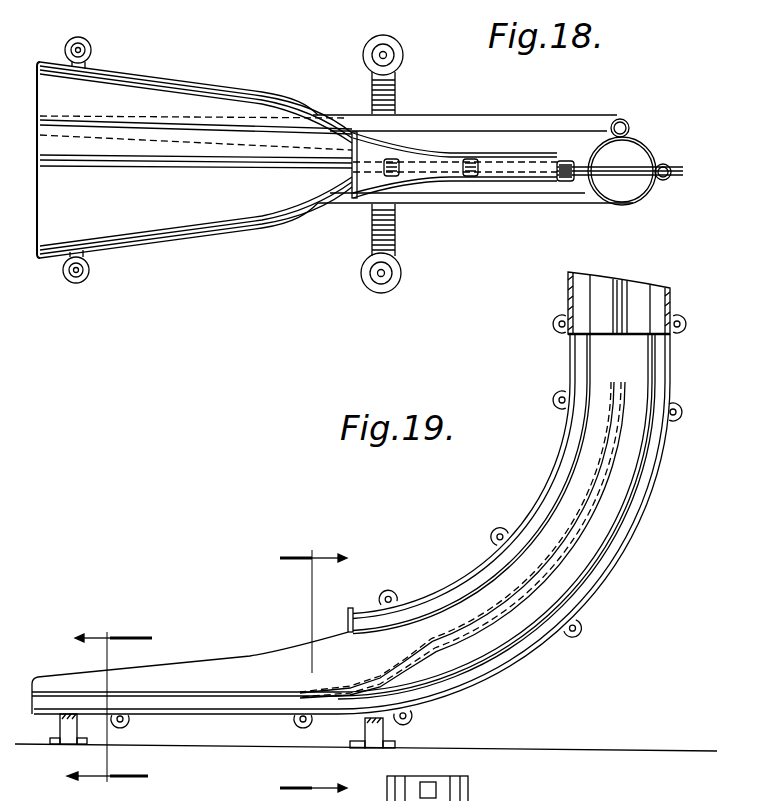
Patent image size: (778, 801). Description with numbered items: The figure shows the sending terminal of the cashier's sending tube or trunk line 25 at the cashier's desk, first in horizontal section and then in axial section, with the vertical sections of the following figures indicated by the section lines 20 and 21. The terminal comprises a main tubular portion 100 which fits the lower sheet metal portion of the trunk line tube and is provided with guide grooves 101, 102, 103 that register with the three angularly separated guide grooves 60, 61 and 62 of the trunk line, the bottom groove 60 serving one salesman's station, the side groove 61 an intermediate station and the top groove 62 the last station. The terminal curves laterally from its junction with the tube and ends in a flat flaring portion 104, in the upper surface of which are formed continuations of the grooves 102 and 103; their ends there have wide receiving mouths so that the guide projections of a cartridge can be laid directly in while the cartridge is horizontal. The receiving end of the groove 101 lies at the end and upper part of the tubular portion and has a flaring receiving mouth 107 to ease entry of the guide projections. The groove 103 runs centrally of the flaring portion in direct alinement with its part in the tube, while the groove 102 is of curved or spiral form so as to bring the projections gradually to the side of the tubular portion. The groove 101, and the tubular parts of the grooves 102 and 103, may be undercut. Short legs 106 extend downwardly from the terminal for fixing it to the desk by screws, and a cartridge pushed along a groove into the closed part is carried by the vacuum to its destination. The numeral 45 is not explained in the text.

In FIG. 19, the section line 20— 20 is at (313, 658).
In FIG. 19, the section line 21— 21 is at (109, 702).
In FIG. 19, the cashier's sending tube or trunk line 25 is at (676, 305).
In FIG. 18, the pipe junction 45 is at (328, 116).
In FIG. 19, the bottom guide groove 60 is at (580, 282).
In FIG. 19, the side guide groove 61 is at (622, 284).
In FIG. 19, the top guide groove 62 is at (665, 292).
In FIG. 18, the main tubular portion 100 is at (561, 207).
In FIG. 19, the main tubular portion 100 is at (656, 498).
In FIG. 18, the guide groove 101 is at (577, 180).
In FIG. 19, the guide groove 101 is at (567, 452).
In FIG. 18, the guide groove 102 is at (128, 125).
In FIG. 19, the guide groove 102 is at (588, 513).
In FIG. 18, the guide groove 103 is at (45, 163).
In FIG. 19, the guide groove 103 is at (656, 452).
In FIG. 18, the flat flaring portion 104 is at (194, 160).
In FIG. 19, the flat flaring portion 104 is at (230, 716).
In FIG. 18, the short legs 106 is at (88, 63).
In FIG. 19, the short legs 106 is at (377, 730).
In FIG. 18, the flaring receiving mouth 107 is at (353, 190).
In FIG. 19, the flaring receiving mouth 107 is at (352, 618).